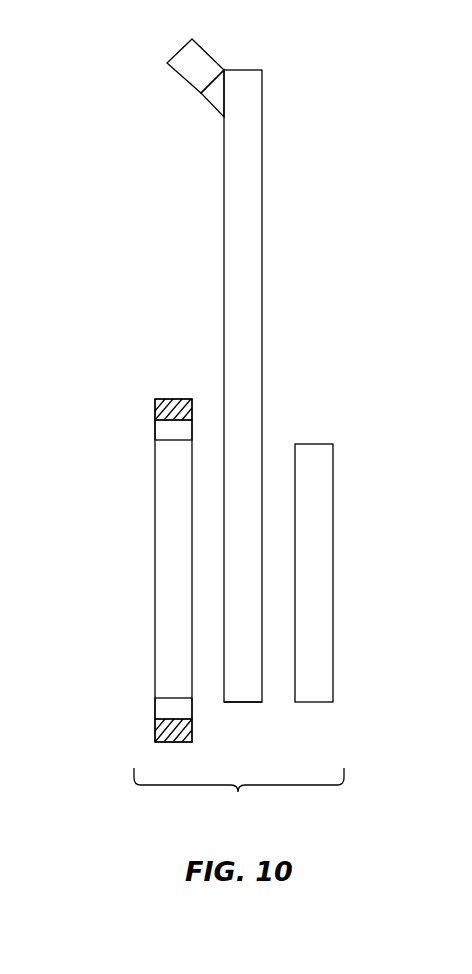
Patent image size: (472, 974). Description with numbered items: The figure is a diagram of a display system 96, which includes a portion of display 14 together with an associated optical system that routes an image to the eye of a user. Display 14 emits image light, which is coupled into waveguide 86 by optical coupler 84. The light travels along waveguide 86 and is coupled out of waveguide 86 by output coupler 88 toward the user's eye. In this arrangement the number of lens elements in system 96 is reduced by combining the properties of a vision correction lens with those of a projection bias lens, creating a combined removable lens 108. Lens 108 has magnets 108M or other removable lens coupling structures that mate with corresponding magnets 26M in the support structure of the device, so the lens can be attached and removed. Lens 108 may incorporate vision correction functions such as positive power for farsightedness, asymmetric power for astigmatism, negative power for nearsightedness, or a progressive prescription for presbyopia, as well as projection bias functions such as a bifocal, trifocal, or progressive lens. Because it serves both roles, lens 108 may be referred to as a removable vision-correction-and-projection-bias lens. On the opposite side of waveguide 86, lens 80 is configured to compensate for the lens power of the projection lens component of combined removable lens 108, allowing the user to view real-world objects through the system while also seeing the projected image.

The display 14 is at (203, 46).
The optical coupler 84 is at (212, 105).
The waveguide 86 is at (248, 211).
The output coupler 88 is at (244, 702).
The lens 80 is at (314, 702).
The combined removable lens 108 is at (155, 631).
The magnets 108M is at (155, 430).
The magnets 26M is at (155, 407).
The display system 96 is at (239, 798).